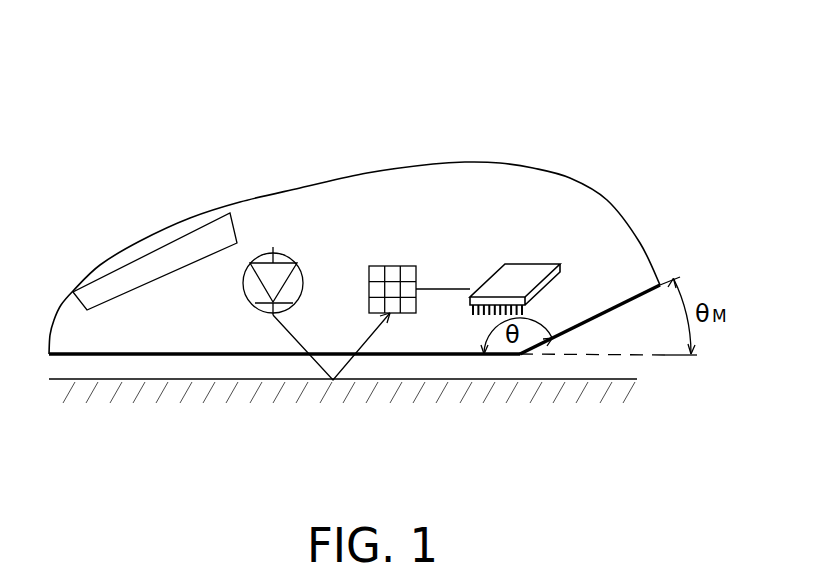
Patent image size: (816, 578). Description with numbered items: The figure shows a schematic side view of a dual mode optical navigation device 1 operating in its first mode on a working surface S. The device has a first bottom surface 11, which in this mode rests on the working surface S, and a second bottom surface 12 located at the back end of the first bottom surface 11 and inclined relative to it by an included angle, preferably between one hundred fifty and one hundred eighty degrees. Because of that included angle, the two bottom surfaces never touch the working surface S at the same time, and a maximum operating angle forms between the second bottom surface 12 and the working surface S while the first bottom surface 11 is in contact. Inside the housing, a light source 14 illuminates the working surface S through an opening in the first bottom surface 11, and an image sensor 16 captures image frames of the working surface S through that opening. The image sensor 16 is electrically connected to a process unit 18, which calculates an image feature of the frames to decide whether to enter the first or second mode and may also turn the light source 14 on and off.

The dual mode optical navigation device 1 is at (102, 107).
The first bottom surface 11 is at (112, 354).
The second bottom surface 12 is at (620, 308).
The light source 14 is at (275, 250).
The image sensor 16 is at (393, 265).
The process unit 18 is at (517, 268).
The working surface S is at (548, 383).